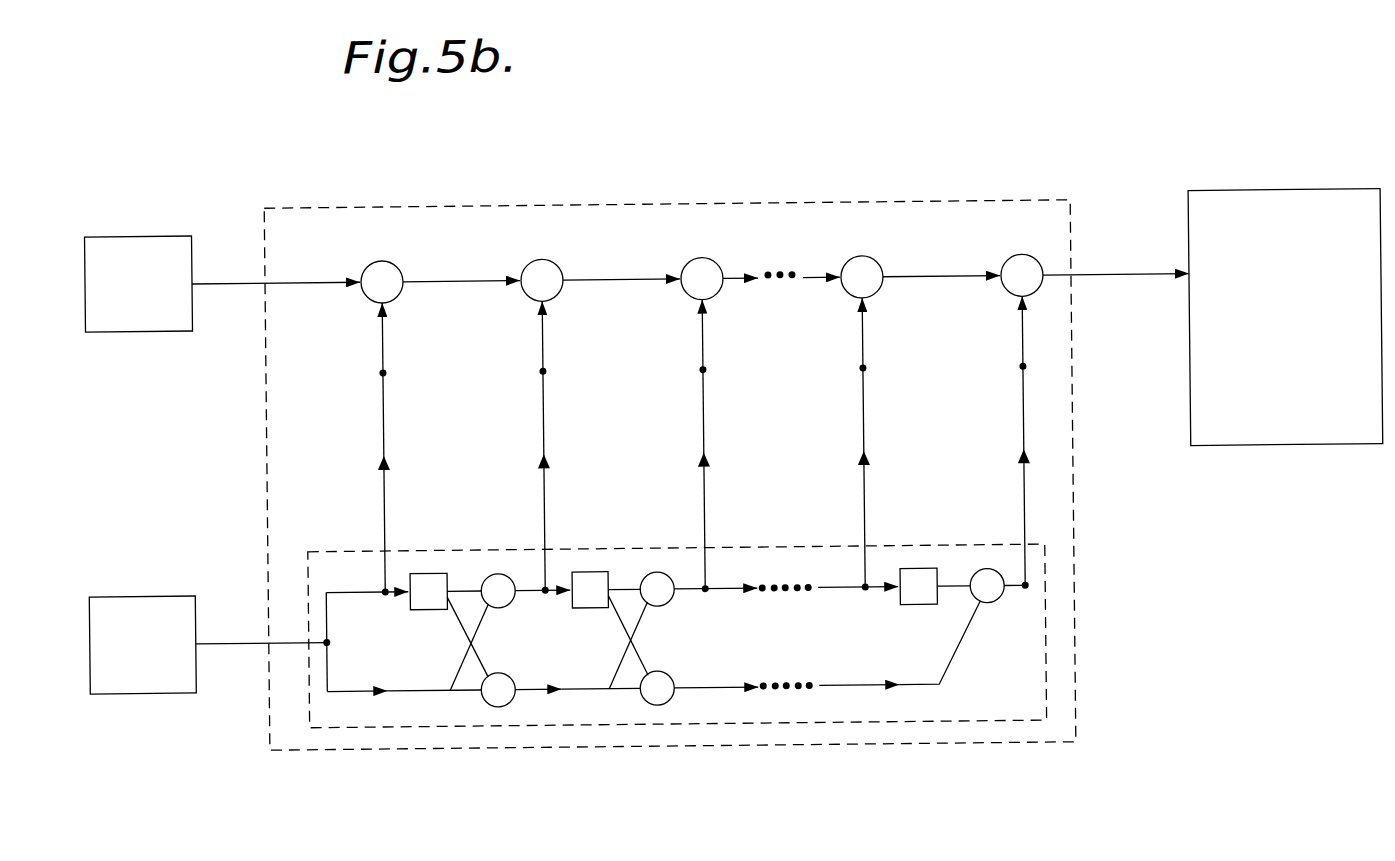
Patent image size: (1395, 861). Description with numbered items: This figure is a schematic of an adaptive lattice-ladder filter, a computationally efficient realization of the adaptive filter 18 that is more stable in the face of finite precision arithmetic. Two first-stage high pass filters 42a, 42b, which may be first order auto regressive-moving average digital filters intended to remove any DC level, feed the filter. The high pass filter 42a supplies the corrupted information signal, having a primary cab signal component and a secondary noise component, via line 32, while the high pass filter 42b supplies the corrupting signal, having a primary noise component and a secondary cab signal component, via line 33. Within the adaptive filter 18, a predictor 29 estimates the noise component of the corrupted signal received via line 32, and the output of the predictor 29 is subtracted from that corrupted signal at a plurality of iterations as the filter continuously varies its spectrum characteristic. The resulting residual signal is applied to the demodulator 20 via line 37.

The adaptive filter 18 is at (671, 209).
The demodulator 20 is at (1270, 453).
The predictor 29 is at (621, 724).
The line 32 is at (228, 283).
The line 33 is at (236, 644).
The line 37 is at (1120, 281).
The high pass filter 42a is at (150, 234).
The high pass filter 42b is at (154, 594).